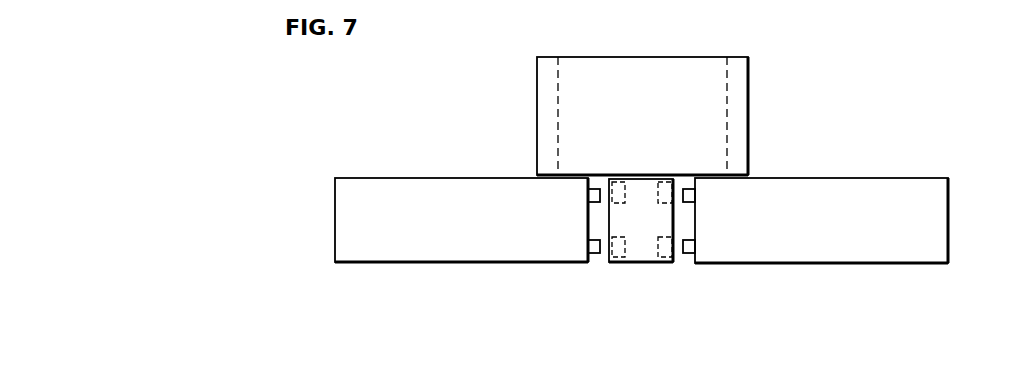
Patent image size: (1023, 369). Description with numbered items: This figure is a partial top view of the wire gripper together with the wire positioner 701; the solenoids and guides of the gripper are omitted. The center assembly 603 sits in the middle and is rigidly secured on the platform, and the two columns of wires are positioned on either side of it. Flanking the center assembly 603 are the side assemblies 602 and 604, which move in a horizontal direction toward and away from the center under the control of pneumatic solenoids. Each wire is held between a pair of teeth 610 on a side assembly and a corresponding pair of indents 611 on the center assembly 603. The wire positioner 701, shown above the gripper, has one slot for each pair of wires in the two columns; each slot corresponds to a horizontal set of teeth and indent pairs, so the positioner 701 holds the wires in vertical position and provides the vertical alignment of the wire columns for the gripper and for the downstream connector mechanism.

The wire positioner 701 is at (642, 57).
The side assembly 602 is at (400, 178).
The side assembly 604 is at (922, 157).
The center assembly 603 is at (660, 262).
The teeth 610 is at (588, 196).
The indents 611 is at (625, 197).